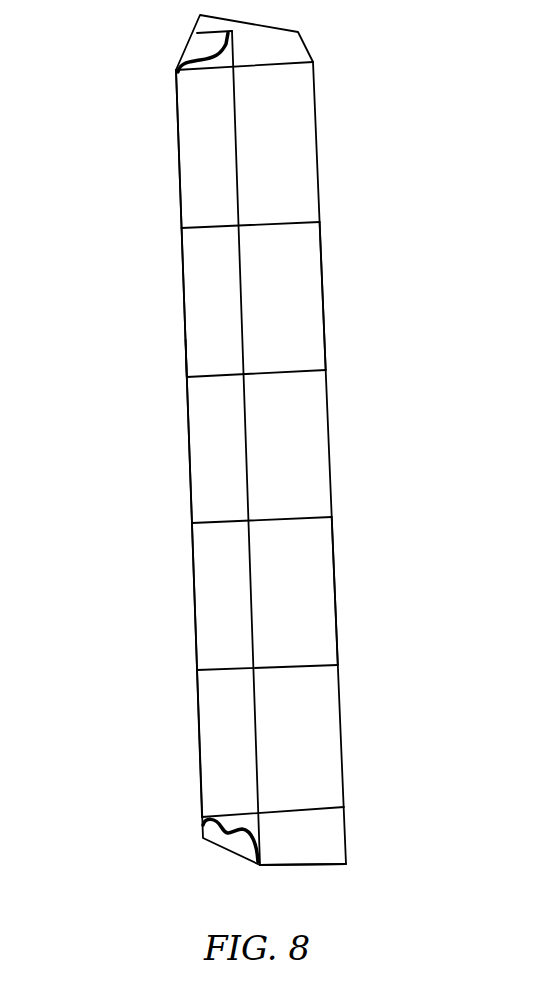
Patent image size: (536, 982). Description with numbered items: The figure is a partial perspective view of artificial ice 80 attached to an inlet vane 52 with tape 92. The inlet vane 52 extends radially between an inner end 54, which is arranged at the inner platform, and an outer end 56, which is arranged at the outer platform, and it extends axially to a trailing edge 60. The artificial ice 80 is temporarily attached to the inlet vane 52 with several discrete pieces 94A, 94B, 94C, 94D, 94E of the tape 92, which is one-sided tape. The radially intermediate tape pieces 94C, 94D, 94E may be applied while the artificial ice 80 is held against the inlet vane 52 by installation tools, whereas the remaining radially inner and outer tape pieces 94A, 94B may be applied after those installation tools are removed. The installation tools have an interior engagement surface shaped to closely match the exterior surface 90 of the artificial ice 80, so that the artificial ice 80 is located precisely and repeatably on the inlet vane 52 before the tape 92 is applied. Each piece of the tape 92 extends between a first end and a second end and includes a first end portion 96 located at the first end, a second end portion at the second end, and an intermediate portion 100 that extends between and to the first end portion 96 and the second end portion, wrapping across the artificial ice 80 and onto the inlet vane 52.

The inlet vane 52 is at (300, 448).
The inner end 54 is at (300, 849).
The outer end 56 is at (261, 36).
The trailing edge 60 is at (378, 591).
The artificial ice 80 is at (162, 40).
The exterior surface 90 is at (212, 855).
The tape 92 is at (301, 447).
The tape piece 94A is at (134, 149).
The tape piece 94B is at (154, 743).
The tape piece 94C is at (137, 302).
The tape piece 94D is at (146, 450).
The tape piece 94E is at (152, 596).
The first end portion 96 is at (363, 296).
The intermediate portion 100 is at (137, 360).